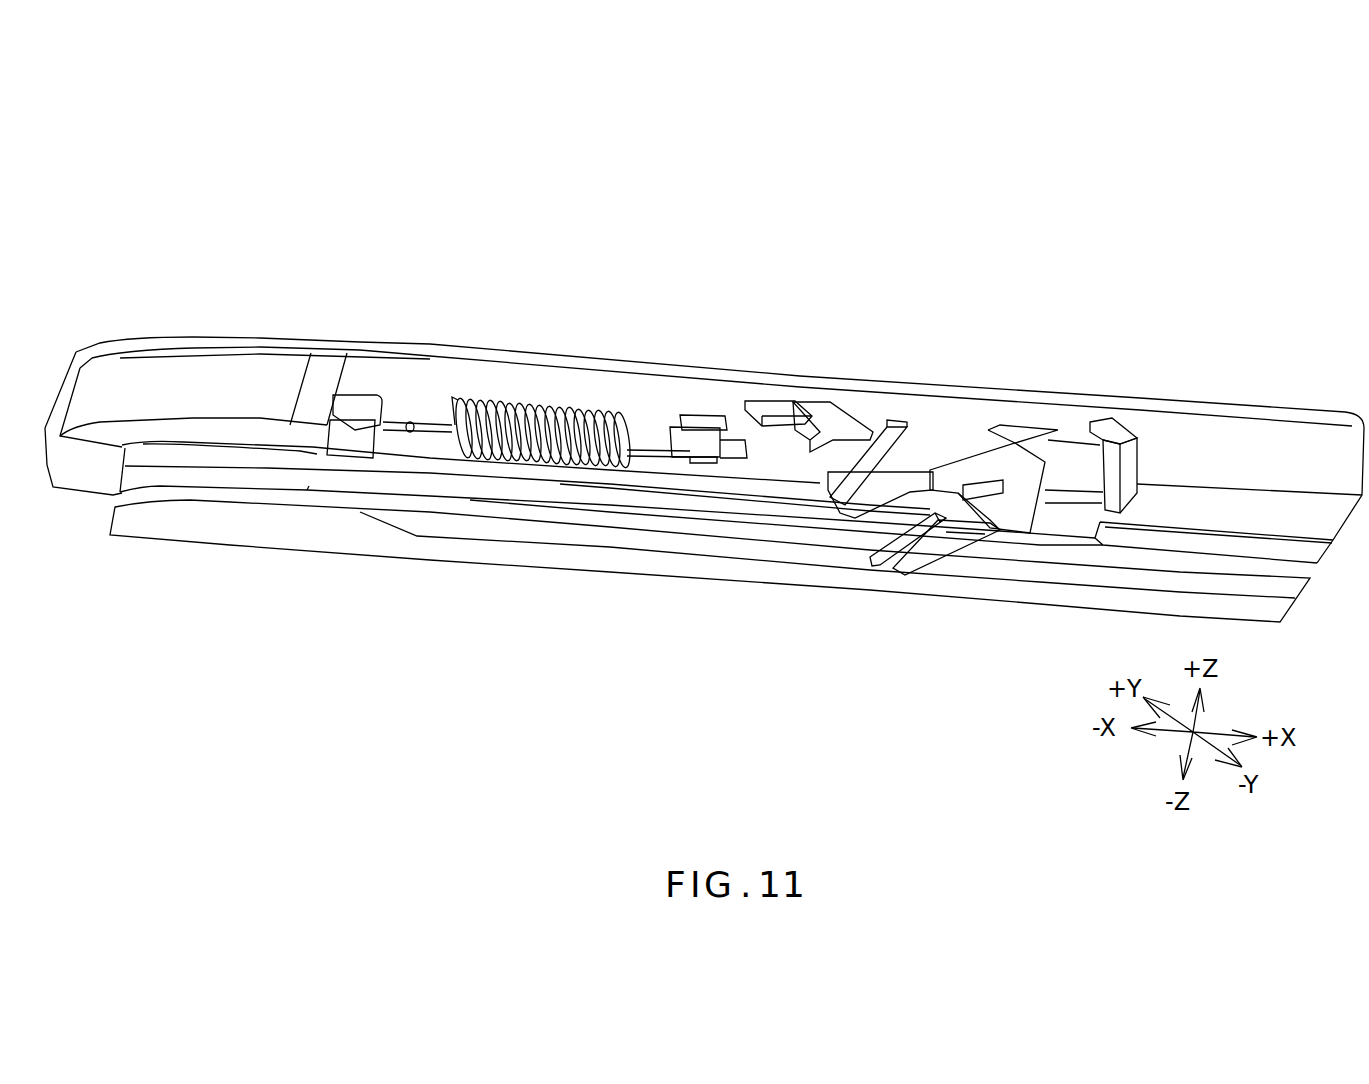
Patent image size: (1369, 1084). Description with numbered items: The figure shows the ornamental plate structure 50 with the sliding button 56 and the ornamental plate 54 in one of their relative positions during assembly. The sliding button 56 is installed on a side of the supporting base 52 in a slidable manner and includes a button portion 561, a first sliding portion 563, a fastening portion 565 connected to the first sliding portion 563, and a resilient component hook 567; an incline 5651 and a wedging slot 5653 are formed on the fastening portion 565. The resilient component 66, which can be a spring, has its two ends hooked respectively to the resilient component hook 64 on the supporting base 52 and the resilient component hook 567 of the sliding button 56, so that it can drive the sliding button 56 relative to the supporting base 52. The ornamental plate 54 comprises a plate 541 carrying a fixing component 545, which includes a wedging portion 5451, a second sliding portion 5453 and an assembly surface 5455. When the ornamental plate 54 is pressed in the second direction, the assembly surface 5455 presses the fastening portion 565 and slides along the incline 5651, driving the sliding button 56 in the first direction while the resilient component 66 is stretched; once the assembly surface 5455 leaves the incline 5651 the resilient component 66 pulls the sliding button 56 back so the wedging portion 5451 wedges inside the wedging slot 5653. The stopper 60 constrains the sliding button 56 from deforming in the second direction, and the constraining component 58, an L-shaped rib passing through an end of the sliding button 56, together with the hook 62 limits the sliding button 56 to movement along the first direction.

The ornamental plate structure 50 is at (1196, 184).
The supporting base 52 is at (1201, 432).
The ornamental plate 54 is at (850, 720).
The plate 541 is at (702, 563).
The fixing component 545 is at (993, 662).
The wedging portion 5451 is at (972, 530).
The second sliding portion 5453 is at (870, 560).
The assembly surface 5455 is at (962, 528).
The sliding button 56 is at (1078, 248).
The button portion 561 is at (903, 423).
The first sliding portion 563 is at (884, 527).
The fastening portion 565 is at (1100, 306).
The incline 5651 is at (986, 494).
The wedging slot 5653 is at (988, 430).
The resilient component hook 567 is at (733, 440).
The constraining component 58 is at (1112, 428).
The stopper 60 is at (767, 408).
The hook 62 is at (815, 408).
The resilient component hook 64 is at (355, 403).
The resilient component 66 is at (500, 396).